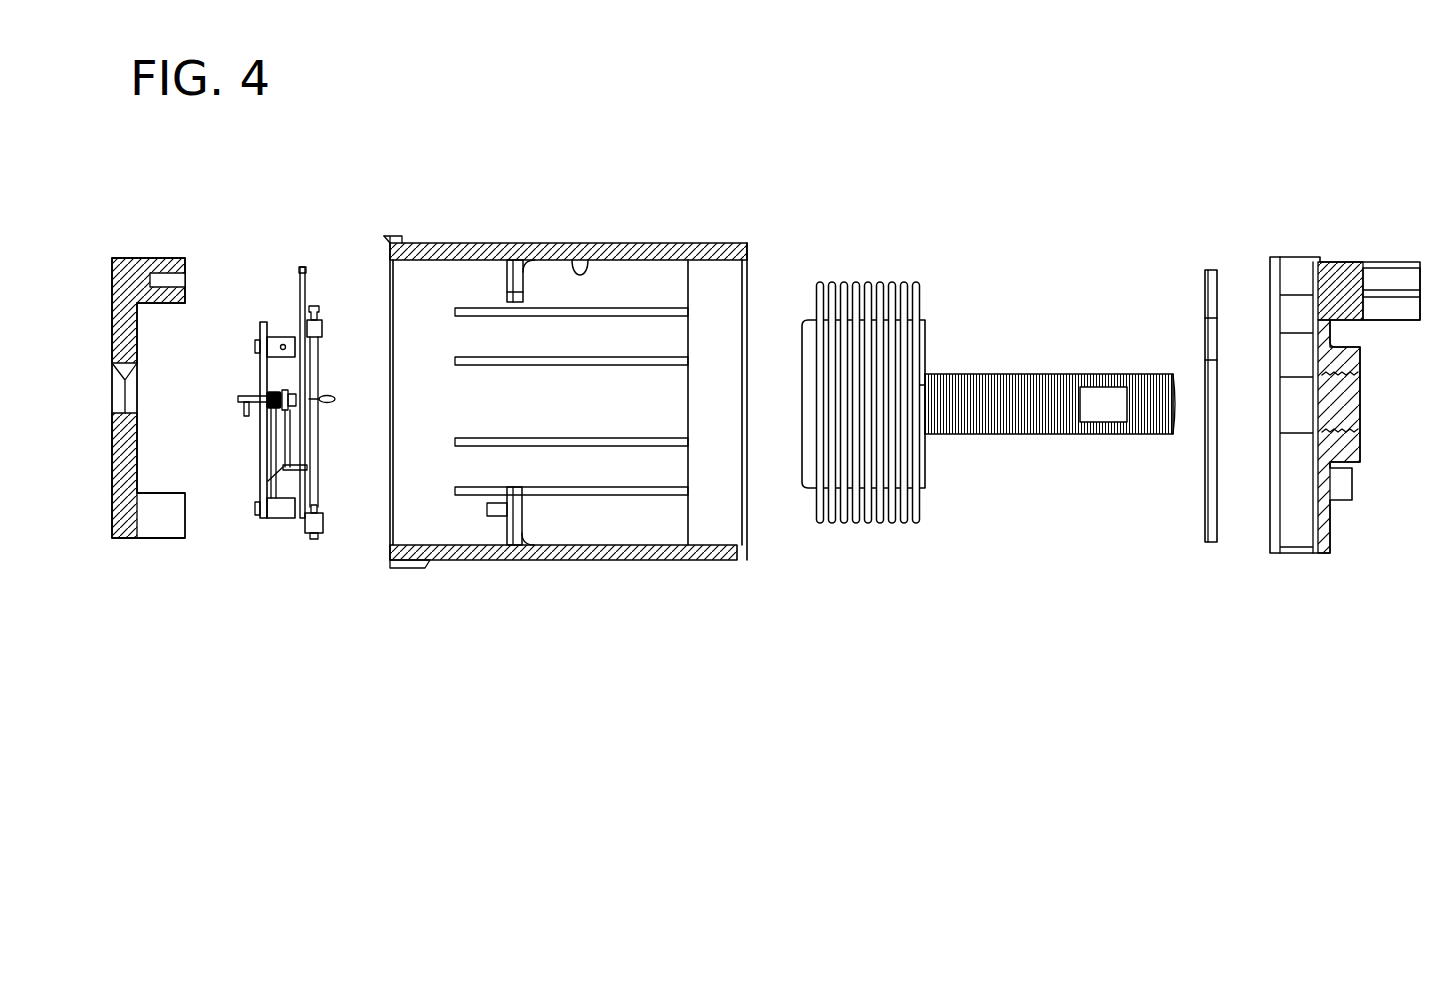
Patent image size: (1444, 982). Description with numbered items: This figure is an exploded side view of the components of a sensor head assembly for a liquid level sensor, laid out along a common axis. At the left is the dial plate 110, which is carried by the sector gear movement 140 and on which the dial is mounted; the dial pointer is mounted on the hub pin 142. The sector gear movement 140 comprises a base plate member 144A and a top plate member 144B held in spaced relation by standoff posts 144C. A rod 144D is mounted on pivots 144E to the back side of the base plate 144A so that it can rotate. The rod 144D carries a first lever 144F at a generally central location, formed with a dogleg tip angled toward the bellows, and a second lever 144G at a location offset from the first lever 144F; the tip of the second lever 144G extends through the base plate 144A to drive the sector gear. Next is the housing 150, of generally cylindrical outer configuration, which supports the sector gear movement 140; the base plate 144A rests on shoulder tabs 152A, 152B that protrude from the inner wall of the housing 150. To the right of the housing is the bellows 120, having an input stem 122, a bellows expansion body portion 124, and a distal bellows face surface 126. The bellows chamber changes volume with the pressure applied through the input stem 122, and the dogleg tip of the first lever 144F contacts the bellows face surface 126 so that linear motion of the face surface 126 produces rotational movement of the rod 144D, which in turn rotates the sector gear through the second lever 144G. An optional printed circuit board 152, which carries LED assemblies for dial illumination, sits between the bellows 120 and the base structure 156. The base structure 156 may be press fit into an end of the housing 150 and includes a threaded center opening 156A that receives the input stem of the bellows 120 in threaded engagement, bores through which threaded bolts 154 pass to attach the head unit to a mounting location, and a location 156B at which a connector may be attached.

The dial plate 110 is at (123, 258).
The bellows 120 is at (968, 406).
The input stem 122 is at (1082, 434).
The bellows expansion body portion 124 is at (857, 525).
The distal bellows face surface 126 is at (800, 368).
The sector gear movement 140 is at (308, 415).
The hub pin 142 is at (247, 418).
The base plate member 144A is at (302, 265).
The top plate member 144B is at (264, 322).
The standoff posts 144C is at (284, 338).
The rod 144D is at (318, 488).
The pivots 144E is at (324, 328).
The first lever 144F is at (329, 402).
The second lever 144G is at (272, 480).
The housing 150 is at (565, 399).
The printed circuit board 152 is at (1212, 268).
The shoulder tab 152A is at (507, 297).
The shoulder tab 152B is at (505, 528).
The threaded bolts 154 is at (570, 262).
The base structure 156 is at (1332, 411).
The threaded center opening 156A is at (1338, 430).
The connector attachment location 156B is at (1393, 262).